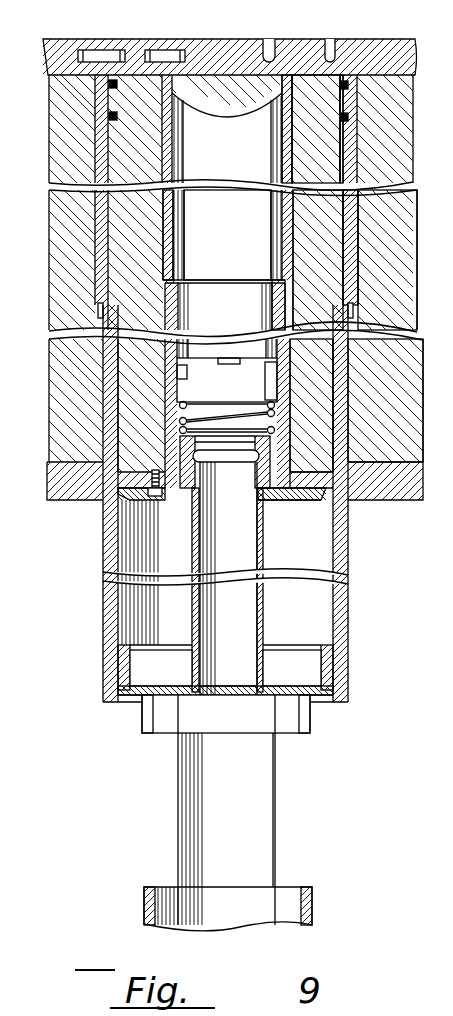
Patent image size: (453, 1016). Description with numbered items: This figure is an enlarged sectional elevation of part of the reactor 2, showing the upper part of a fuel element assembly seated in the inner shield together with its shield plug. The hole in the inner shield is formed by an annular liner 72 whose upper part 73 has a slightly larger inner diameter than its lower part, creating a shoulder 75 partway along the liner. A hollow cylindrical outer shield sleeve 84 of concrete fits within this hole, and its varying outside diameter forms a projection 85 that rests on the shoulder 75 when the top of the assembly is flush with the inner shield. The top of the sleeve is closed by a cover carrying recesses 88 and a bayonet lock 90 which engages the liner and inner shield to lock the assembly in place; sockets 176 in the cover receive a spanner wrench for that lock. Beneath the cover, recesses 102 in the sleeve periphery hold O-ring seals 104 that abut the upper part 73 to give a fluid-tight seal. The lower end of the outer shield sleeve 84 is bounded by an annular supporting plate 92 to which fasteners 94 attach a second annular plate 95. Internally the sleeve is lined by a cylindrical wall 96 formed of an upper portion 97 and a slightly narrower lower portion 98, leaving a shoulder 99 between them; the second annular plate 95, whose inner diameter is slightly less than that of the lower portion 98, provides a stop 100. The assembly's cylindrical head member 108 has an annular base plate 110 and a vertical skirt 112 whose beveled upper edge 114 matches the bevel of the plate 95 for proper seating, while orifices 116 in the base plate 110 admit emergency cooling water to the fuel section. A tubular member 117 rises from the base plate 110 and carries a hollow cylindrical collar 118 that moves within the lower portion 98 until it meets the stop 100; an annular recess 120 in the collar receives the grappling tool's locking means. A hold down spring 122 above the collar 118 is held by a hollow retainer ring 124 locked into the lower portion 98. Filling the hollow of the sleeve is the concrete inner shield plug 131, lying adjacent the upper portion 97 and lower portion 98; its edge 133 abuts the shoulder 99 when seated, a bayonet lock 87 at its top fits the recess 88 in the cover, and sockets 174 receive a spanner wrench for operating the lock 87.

The concrete structure 2 is at (427, 385).
The annular liner 72 is at (360, 268).
The upper part 73 is at (358, 296).
The shoulder 75 is at (337, 314).
The outer shield sleeve 84 is at (333, 240).
The projection 85 is at (98, 312).
The bayonet lock 87 is at (170, 50).
The recesses 88 is at (156, 42).
The bayonet lock 90 is at (97, 55).
The annular supporting plate 92 is at (272, 500).
The fasteners 94 is at (135, 498).
The second annular plate 95 is at (174, 504).
The cylindrical wall 96 is at (297, 172).
The upper portion 97 is at (293, 143).
The lower portion 98 is at (291, 380).
The shoulder 99 is at (164, 285).
The stop 100 is at (270, 505).
The recesses 102 is at (345, 103).
The O-ring seals 104 is at (349, 84).
The cylindrical head member 108 is at (320, 700).
The annular base plate 110 is at (335, 694).
The cylindrical vertical skirt 112 is at (333, 670).
The upper edge 114 is at (308, 648).
The orifices 116 is at (290, 695).
The tubular member 117 is at (264, 610).
The hollow cylindrical collar 118 is at (270, 456).
The annular recess 120 is at (230, 462).
The hold down spring 122 is at (274, 438).
The hollow retainer ring 124 is at (186, 386).
The inner shield plug 131 is at (236, 246).
The edge 133 is at (284, 268).
The sockets 174 is at (270, 40).
The sockets 176 is at (330, 40).